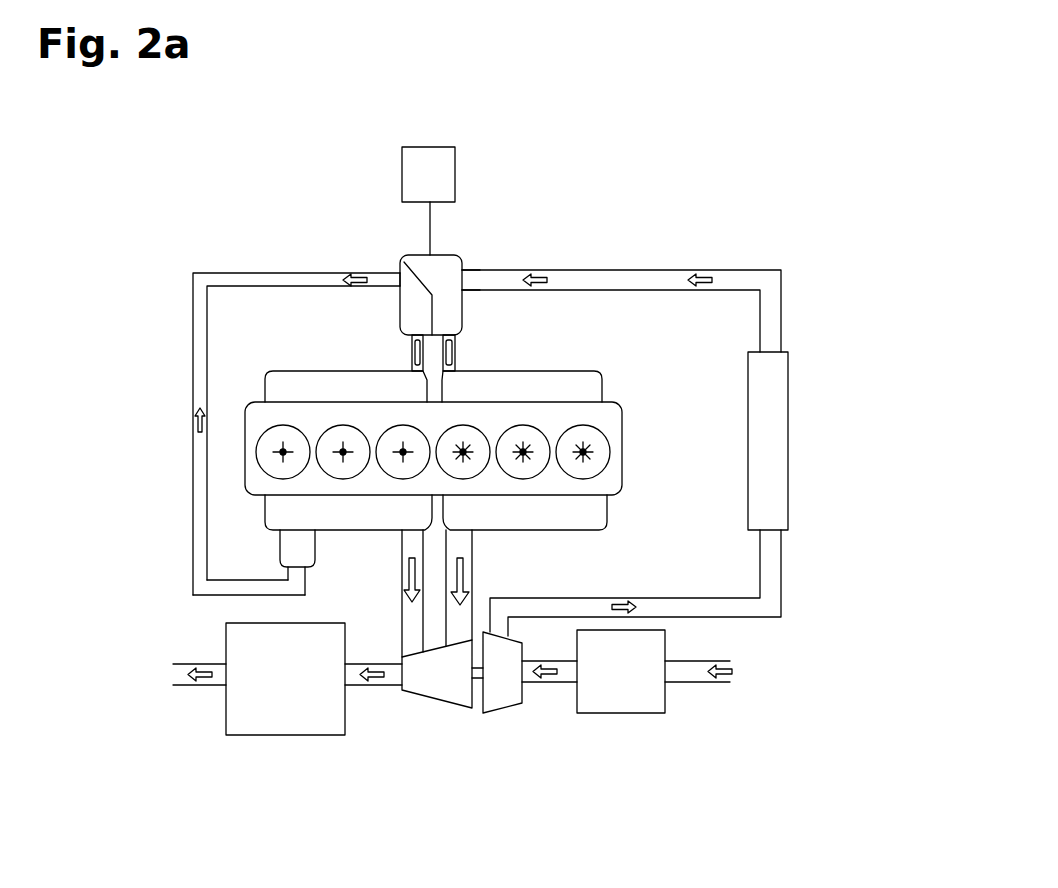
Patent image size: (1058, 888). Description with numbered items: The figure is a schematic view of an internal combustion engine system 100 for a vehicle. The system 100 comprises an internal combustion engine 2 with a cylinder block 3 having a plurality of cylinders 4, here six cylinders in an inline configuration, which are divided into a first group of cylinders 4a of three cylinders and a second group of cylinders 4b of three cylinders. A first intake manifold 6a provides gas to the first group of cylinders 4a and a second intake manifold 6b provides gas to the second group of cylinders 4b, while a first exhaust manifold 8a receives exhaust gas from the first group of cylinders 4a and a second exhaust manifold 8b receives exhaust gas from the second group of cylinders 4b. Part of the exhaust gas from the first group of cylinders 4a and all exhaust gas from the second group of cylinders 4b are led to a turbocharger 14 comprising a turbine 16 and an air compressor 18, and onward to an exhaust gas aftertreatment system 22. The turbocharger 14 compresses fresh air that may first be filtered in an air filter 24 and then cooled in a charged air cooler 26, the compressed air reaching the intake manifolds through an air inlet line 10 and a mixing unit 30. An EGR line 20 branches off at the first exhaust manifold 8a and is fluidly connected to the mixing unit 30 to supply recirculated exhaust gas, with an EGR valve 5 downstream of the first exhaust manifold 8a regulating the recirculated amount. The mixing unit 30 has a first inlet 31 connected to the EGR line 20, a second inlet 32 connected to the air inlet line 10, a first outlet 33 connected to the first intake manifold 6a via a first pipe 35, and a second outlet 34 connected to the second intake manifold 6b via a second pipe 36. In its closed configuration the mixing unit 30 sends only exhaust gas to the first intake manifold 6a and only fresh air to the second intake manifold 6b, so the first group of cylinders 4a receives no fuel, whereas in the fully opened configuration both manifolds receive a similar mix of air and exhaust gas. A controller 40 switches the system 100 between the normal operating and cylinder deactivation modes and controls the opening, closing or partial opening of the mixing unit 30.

The internal combustion engine system 100 is at (716, 228).
The internal combustion engine 2 is at (422, 418).
The cylinder block 3 is at (623, 428).
The cylinders 4 is at (476, 435).
The first group of cylinders 4a is at (420, 424).
The second group of cylinders 4b is at (442, 424).
The EGR valve 5 is at (280, 556).
The first intake manifold 6a is at (298, 371).
The second intake manifold 6b is at (586, 368).
The first exhaust manifold 8a is at (265, 513).
The second exhaust manifold 8b is at (607, 520).
The air inlet line 10 is at (763, 617).
The turbocharger 14 is at (456, 720).
The turbine 16 is at (410, 673).
The air compressor 18 is at (517, 720).
The EGR line 20 is at (193, 598).
The exhaust gas aftertreatment system 22 is at (226, 722).
The air filter 24 is at (665, 713).
The charged air cooler 26 is at (788, 540).
The mixing unit 30 is at (465, 257).
The first inlet 31 is at (392, 264).
The second inlet 32 is at (472, 278).
The first outlet 33 is at (402, 335).
The second outlet 34 is at (466, 329).
The first pipe 35 is at (398, 360).
The second pipe 36 is at (467, 353).
The controller 40 is at (455, 147).